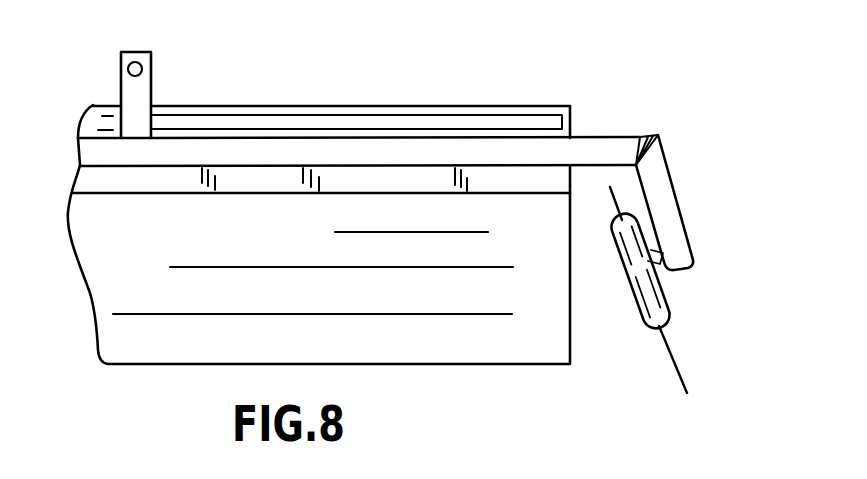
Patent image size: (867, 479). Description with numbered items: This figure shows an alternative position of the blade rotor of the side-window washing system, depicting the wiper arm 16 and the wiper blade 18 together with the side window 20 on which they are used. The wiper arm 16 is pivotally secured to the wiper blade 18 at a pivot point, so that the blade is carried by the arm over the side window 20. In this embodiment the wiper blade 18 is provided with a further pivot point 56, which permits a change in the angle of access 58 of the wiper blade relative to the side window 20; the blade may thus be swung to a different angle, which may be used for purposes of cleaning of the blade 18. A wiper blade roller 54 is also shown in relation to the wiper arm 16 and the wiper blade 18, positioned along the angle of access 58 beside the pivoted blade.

The wiper arm 16 is at (350, 122).
The wiper blade 18 is at (408, 155).
The side window 20 is at (458, 301).
The wiper blade roller 54 is at (672, 308).
The pivot point 56 is at (652, 137).
The angle of access 58 is at (680, 362).